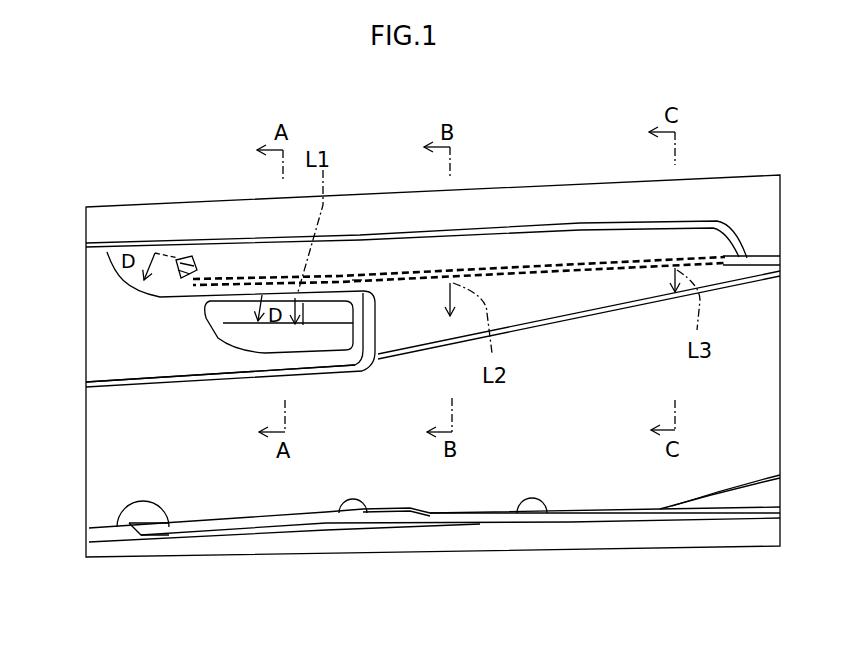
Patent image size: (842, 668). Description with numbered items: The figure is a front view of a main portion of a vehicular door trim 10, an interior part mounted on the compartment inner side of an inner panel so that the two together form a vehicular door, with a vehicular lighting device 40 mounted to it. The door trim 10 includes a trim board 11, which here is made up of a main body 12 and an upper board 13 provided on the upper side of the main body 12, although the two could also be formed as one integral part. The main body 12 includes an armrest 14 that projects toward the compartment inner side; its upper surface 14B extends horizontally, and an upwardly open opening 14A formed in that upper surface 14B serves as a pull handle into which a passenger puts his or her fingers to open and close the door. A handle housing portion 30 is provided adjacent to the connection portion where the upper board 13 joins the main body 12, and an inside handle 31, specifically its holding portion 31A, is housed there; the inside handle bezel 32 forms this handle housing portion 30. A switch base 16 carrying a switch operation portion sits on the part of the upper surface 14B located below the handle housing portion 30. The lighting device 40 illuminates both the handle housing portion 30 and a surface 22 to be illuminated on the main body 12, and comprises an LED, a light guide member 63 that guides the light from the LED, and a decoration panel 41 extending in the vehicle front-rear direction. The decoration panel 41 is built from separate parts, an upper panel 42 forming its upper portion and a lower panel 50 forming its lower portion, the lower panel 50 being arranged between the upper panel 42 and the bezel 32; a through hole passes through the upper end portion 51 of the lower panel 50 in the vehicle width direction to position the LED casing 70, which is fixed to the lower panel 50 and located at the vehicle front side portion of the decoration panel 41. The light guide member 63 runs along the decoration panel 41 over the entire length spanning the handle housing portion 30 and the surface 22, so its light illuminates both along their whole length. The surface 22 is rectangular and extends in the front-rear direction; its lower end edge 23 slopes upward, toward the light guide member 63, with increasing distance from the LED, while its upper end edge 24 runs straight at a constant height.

The vehicular door trim 10 is at (112, 175).
The trim board 11 is at (433, 189).
The main body 12 is at (623, 477).
The upper board 13 is at (707, 198).
The armrest 14 is at (270, 540).
The opening 14A is at (547, 513).
The upper surface 14B is at (169, 527).
The switch base 16 is at (367, 513).
The surface to be illuminated 22 is at (710, 280).
The lower end edge 23 is at (597, 313).
The upper end edge 24 is at (617, 270).
The handle housing portion 30 is at (231, 322).
The inside handle 31 is at (185, 354).
The holding portion 31A is at (253, 334).
The inside handle bezel 32 is at (253, 362).
The vehicular lighting device 40 is at (128, 291).
The decoration panel 41 is at (459, 186).
The upper panel 42 is at (490, 253).
The lower panel 50 is at (573, 262).
The upper end portion 51 is at (459, 213).
The light guide member 63 is at (357, 278).
The casing 70 is at (179, 254).